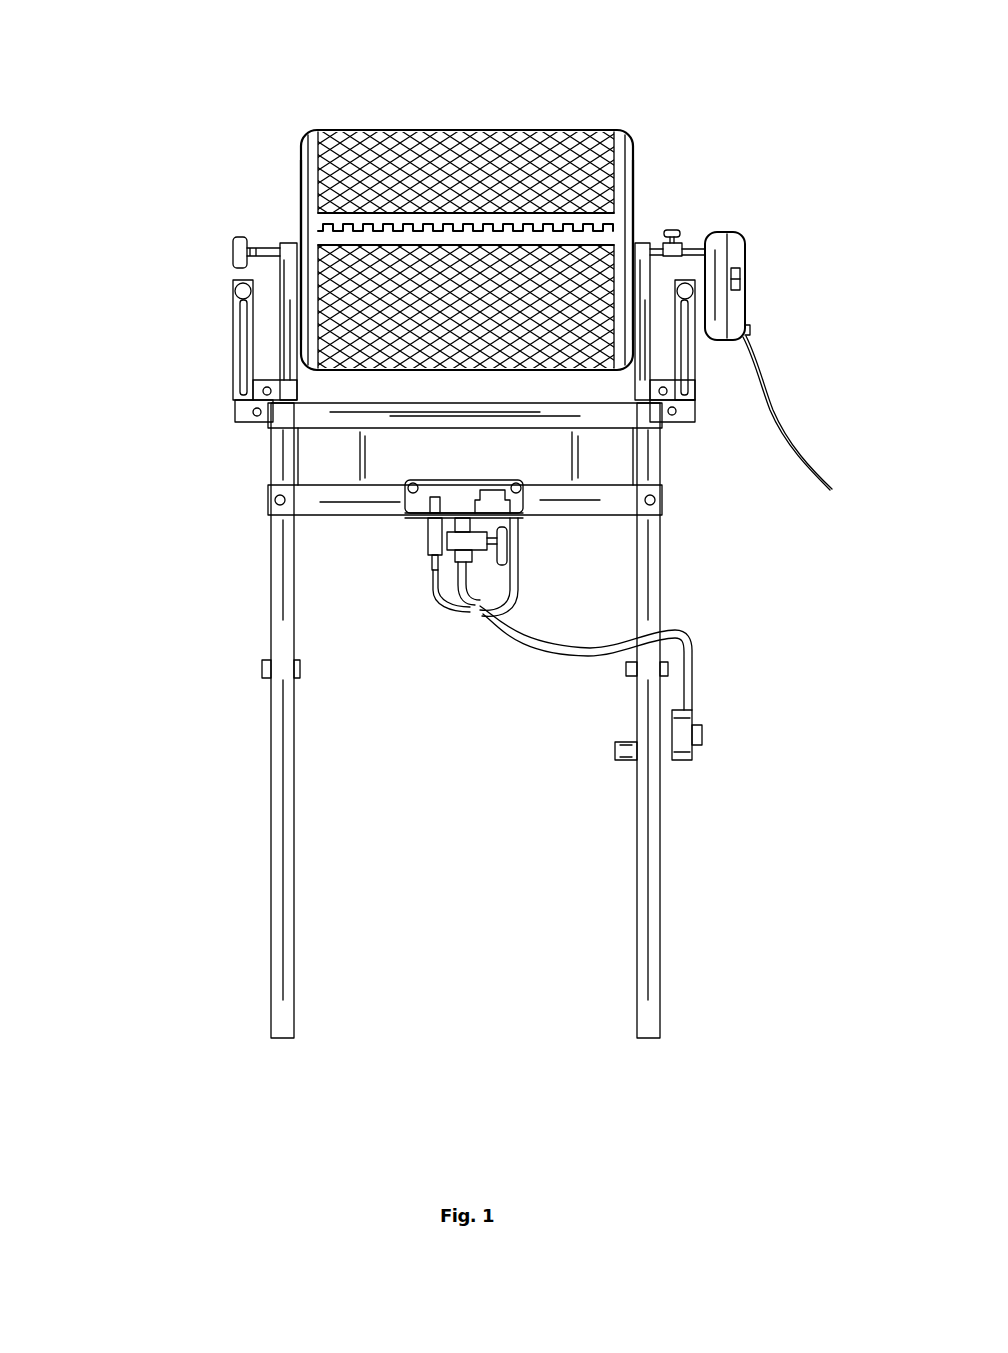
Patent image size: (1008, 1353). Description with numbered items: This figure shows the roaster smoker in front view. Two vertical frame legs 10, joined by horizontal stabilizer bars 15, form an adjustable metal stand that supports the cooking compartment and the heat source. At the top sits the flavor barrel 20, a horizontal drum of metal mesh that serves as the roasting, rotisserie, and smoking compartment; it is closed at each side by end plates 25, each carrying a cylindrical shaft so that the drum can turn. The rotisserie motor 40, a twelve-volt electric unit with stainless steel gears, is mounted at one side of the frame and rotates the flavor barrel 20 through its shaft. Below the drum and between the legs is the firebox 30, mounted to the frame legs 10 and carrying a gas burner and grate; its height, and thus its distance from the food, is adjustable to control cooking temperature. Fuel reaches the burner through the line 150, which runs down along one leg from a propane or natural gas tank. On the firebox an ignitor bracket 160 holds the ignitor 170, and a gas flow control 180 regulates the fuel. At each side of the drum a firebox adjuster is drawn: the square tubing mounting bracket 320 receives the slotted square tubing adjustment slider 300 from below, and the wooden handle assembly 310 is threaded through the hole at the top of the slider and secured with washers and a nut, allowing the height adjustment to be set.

The frame legs 10 is at (280, 984).
The stabilizer bars 15 is at (268, 510).
The flavor barrel 20 is at (522, 128).
The end plates 25 is at (293, 160).
The firebox 30 is at (600, 463).
The rotisserie motor 40 is at (738, 243).
The line 150 is at (690, 668).
The ignitor bracket 160 is at (433, 515).
The ignitor 170 is at (423, 542).
The gas flow control 180 is at (492, 493).
The slotted square tubing adjustment slider 300 is at (240, 368).
The wooden handle assembly 310 is at (233, 291).
The mounting bracket 320 is at (233, 329).